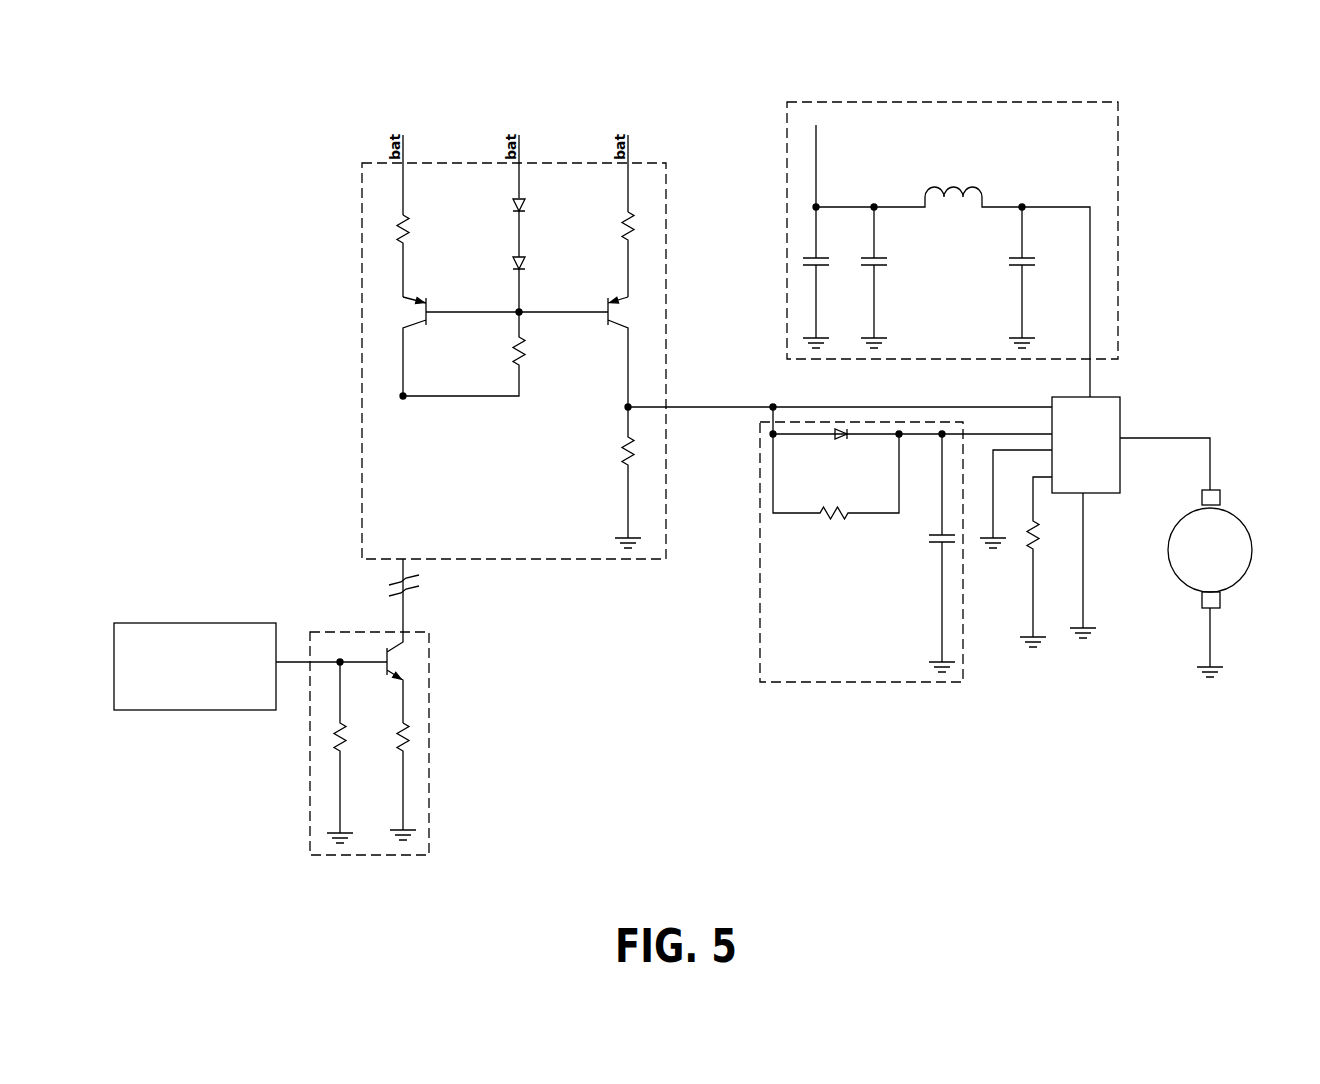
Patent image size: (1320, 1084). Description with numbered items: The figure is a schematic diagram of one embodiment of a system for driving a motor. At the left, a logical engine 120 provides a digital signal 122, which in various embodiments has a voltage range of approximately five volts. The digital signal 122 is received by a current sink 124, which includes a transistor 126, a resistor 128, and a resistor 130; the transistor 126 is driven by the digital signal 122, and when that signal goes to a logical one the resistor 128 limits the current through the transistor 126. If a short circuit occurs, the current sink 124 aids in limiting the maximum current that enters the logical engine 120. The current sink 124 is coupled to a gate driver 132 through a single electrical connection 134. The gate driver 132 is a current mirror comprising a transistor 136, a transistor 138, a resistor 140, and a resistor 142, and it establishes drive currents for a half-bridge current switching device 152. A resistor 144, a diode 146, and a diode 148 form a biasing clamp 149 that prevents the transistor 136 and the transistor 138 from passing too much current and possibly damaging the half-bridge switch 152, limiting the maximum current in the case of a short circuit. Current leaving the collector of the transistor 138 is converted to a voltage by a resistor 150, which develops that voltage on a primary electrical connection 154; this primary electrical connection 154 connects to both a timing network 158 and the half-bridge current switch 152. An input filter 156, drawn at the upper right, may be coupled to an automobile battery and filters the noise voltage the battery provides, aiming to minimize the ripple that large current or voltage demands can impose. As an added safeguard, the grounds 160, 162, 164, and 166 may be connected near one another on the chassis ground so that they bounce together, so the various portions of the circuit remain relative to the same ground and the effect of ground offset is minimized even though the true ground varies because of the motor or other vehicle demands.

The logical engine 120 is at (190, 722).
The digital signal 122 is at (293, 650).
The current sink 124 is at (362, 862).
The transistor 126 is at (405, 665).
The resistor 128 is at (415, 735).
The resistor 130 is at (328, 744).
The gate driver 132 is at (335, 407).
The single electrical connection 134 is at (422, 616).
The transistor 136 is at (405, 318).
The transistor 138 is at (630, 320).
The resistor 140 is at (395, 232).
The resistor 142 is at (634, 229).
The resistor 144 is at (527, 358).
The diode 146 is at (512, 207).
The diode 148 is at (528, 258).
The biasing clamp 149 is at (540, 293).
The resistor 150 is at (640, 456).
The half-bridge current switching device 152 is at (1138, 412).
The primary electrical connection 154 is at (722, 390).
The input filter 156 is at (1135, 150).
The timing network 158 is at (854, 700).
The ground 160 is at (1245, 698).
The ground 162 is at (1102, 658).
The ground 164 is at (1046, 668).
The ground 166 is at (645, 571).